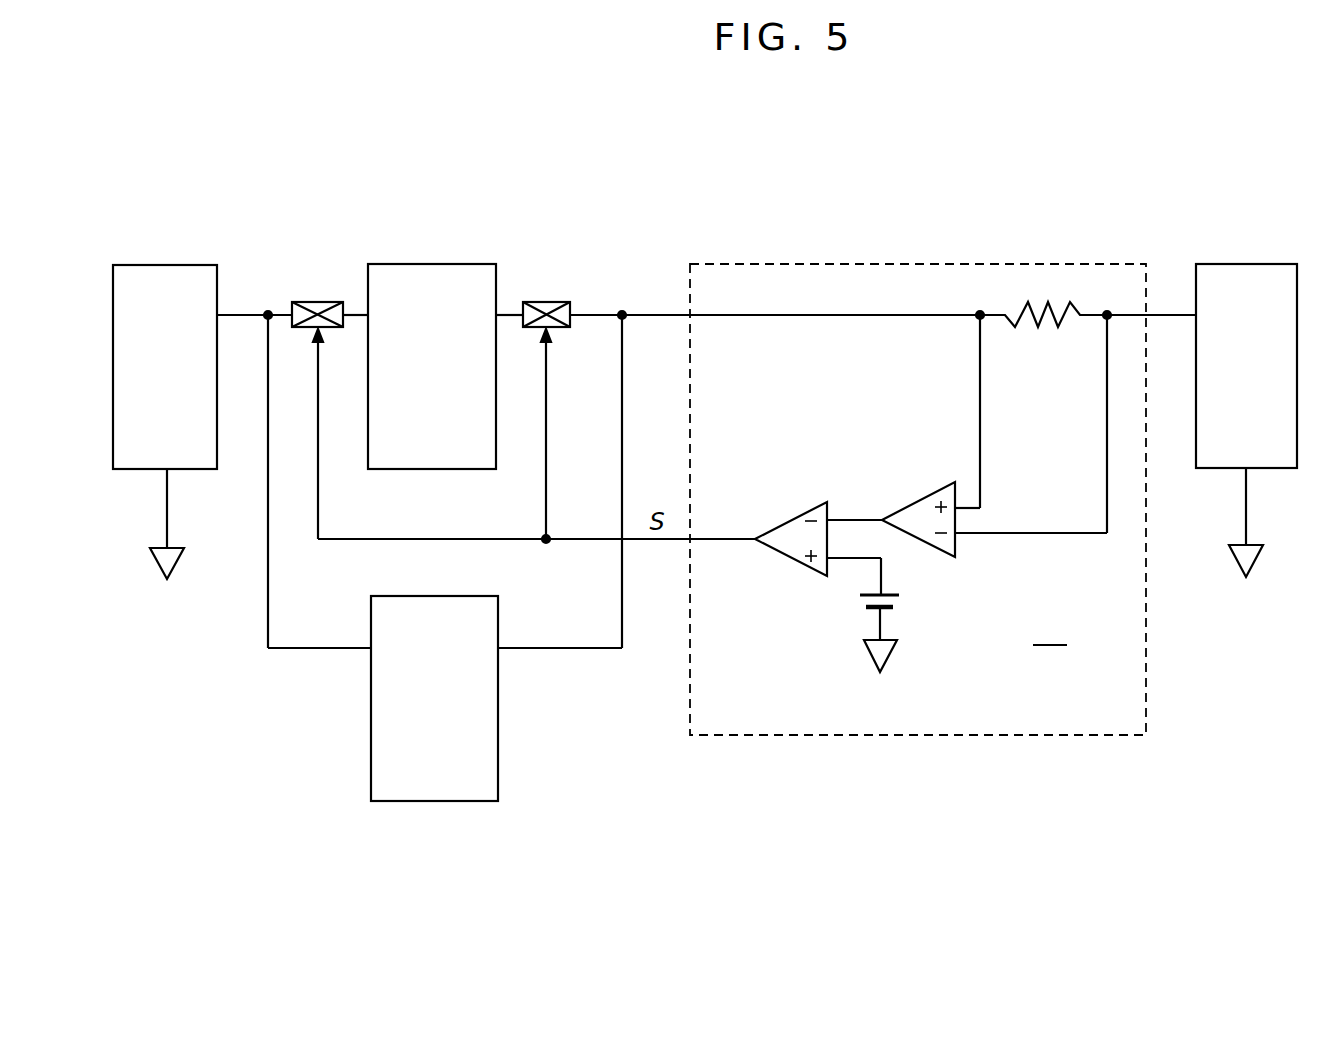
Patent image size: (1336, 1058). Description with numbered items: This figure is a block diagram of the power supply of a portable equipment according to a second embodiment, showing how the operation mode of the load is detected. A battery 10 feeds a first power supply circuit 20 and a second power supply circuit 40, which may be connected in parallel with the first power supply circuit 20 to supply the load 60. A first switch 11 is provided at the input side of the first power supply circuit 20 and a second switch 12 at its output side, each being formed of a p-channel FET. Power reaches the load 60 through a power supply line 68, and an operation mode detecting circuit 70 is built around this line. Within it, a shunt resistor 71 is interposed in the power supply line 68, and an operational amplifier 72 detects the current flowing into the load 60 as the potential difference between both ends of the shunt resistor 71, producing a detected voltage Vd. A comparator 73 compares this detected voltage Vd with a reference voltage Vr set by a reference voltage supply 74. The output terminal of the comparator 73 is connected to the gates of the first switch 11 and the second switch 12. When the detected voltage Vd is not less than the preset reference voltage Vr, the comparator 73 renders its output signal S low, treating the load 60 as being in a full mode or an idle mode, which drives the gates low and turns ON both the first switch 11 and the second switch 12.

The battery 10 is at (167, 265).
The first switch 11 is at (318, 302).
The second switch 12 is at (547, 302).
The first power supply circuit 20 is at (430, 264).
The second power supply circuit 40 is at (432, 801).
The load 60 is at (1246, 264).
The power supply line 68 is at (778, 318).
The operation mode detecting circuit 70 is at (943, 499).
The shunt resistor 71 is at (1031, 320).
The operational amplifier 72 is at (923, 488).
The comparator 73 is at (783, 557).
The reference voltage supply 74 is at (902, 597).